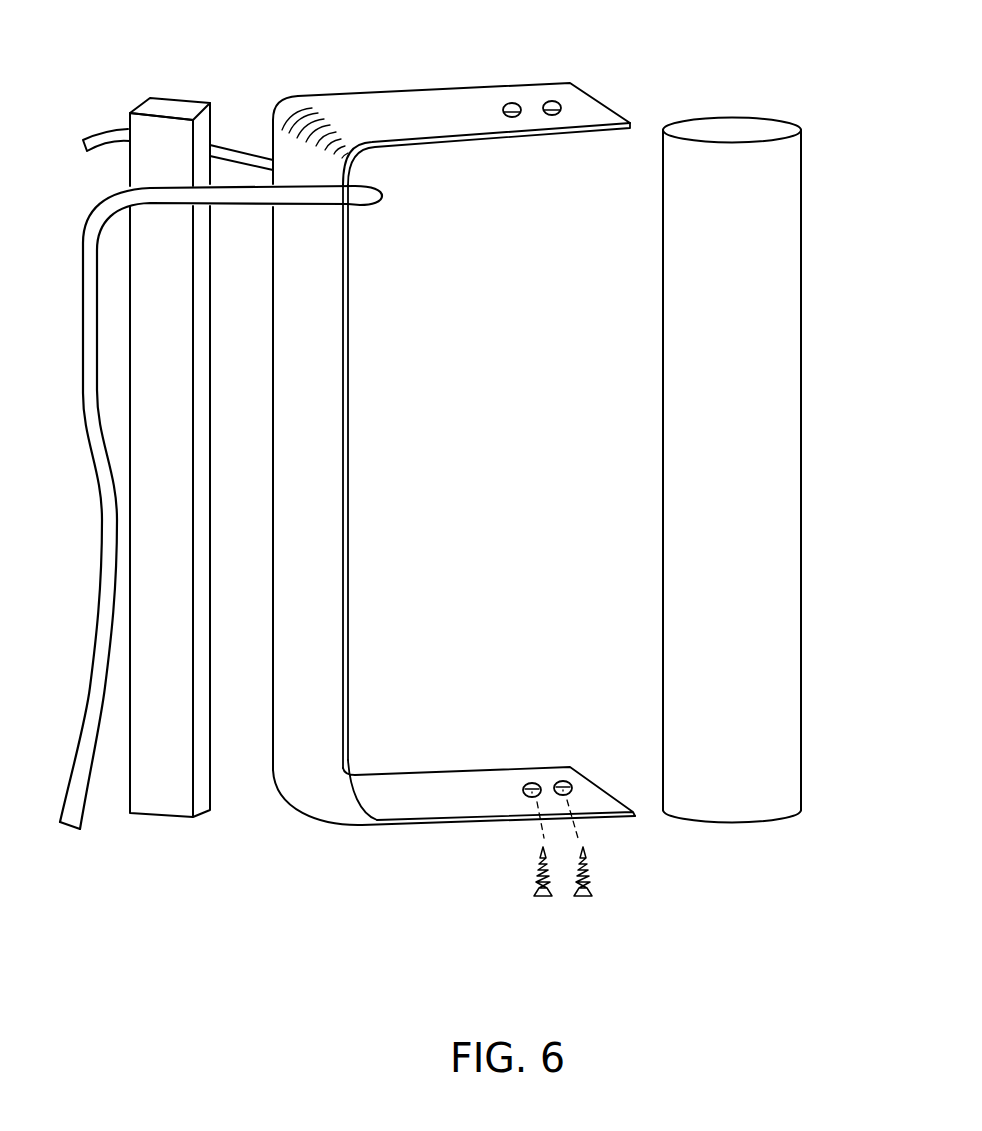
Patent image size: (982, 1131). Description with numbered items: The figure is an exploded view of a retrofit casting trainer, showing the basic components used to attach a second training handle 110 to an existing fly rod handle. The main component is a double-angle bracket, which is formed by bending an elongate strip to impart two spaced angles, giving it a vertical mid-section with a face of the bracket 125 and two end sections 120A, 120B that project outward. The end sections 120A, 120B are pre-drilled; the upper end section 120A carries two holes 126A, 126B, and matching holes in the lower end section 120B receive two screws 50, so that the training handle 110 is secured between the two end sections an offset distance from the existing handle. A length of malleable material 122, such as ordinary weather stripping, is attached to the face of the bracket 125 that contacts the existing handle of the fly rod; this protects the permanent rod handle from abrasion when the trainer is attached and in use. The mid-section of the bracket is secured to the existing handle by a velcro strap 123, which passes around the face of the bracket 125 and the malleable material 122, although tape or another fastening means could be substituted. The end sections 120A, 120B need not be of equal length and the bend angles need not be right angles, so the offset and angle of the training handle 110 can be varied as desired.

The screws 50 is at (545, 897).
The training handle 110 is at (755, 388).
The end section of double-angle bracket 120A is at (363, 113).
The end section of double-angle bracket 120B is at (438, 805).
The malleable material 122 is at (155, 797).
The velcro strap 123 is at (107, 212).
The face of the bracket 125 is at (327, 353).
The hole 126A is at (511, 101).
The hole 126B is at (556, 100).